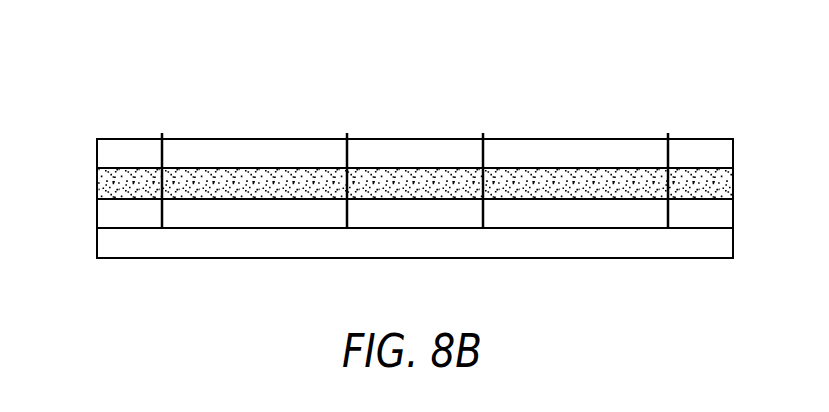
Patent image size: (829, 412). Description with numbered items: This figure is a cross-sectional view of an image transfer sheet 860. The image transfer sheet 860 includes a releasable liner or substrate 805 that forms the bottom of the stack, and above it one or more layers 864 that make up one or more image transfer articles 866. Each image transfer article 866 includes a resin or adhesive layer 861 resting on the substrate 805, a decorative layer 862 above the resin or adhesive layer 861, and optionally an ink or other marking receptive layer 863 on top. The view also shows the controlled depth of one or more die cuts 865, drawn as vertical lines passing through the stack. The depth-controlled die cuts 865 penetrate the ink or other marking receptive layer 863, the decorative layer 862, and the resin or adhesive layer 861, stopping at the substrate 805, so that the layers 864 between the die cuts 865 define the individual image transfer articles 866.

The image transfer sheet 860 is at (573, 60).
The releasable liner or substrate 805 is at (735, 244).
The resin or adhesive layer 861 is at (735, 215).
The decorative layer 862 is at (735, 186).
The ink or other marking receptive layer 863 is at (735, 152).
The layers 864 is at (404, 183).
The die cuts 865 is at (162, 133).
The image transfer articles 866 is at (347, 265).